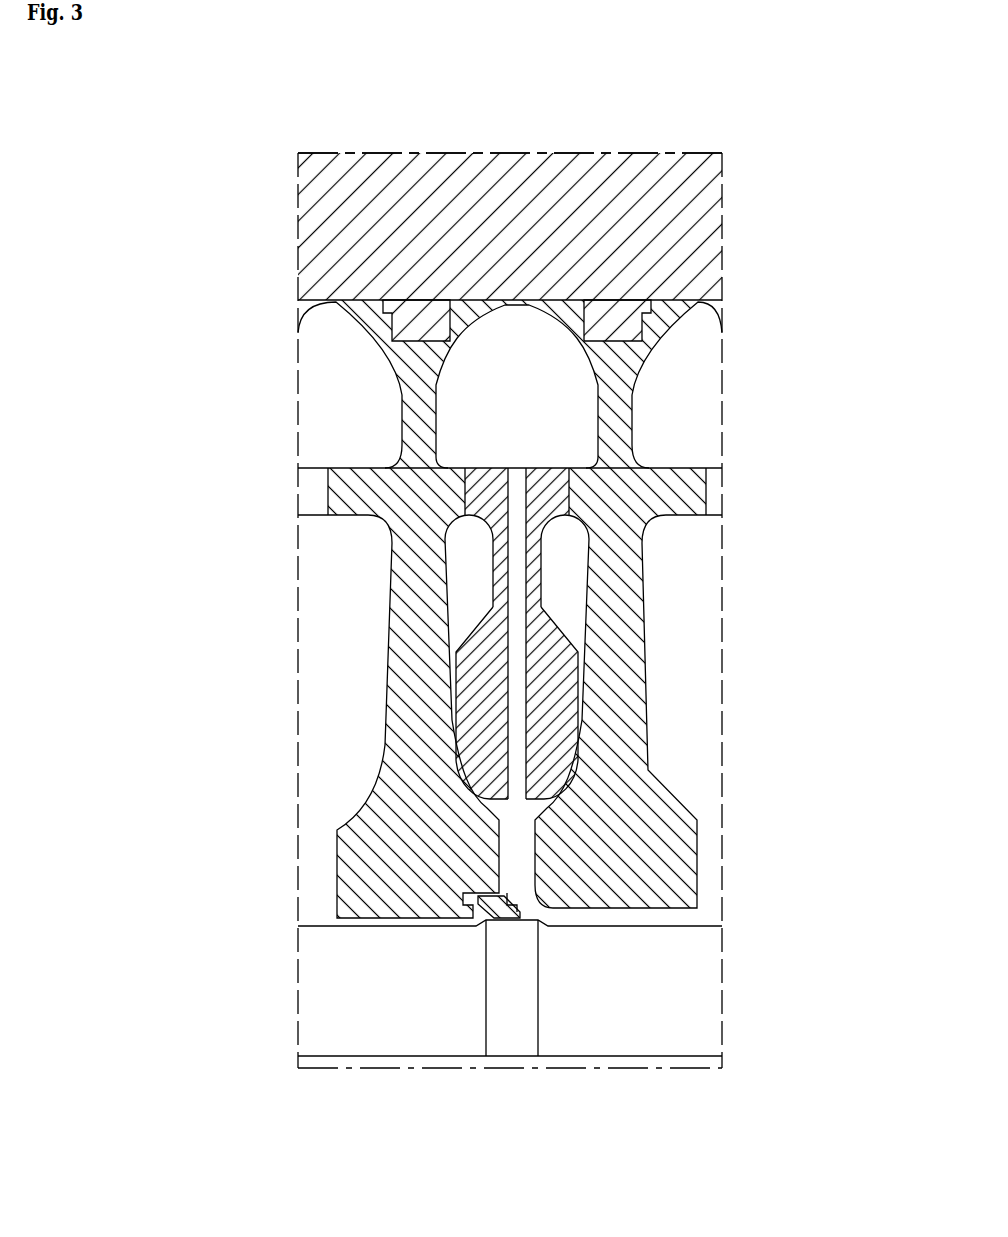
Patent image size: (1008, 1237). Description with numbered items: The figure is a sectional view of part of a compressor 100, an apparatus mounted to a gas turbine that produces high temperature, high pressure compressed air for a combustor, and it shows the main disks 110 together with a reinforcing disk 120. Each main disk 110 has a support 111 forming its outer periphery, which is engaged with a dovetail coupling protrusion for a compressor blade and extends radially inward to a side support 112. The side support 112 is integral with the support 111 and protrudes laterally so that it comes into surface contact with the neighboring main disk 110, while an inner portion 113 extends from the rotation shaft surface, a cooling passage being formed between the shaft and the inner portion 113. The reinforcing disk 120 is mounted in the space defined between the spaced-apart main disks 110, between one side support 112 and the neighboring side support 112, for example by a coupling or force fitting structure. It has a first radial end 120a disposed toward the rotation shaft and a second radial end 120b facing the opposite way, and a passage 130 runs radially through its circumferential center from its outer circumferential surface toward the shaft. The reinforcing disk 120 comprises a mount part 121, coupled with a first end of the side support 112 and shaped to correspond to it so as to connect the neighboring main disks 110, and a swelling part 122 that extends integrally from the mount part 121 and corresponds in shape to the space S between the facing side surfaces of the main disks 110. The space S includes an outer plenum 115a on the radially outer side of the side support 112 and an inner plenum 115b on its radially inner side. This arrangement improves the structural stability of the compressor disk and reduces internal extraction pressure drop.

The compressor 100 is at (536, 116).
The space S is at (198, 145).
The outer plenum 115a is at (545, 365).
The inner plenum 115b is at (588, 583).
The main disk 110 is at (200, 375).
The support 111 is at (385, 357).
The side support 112 is at (452, 462).
The inner portion 113 is at (392, 735).
The reinforcing disk 120 is at (827, 520).
The first radial end 120a is at (547, 783).
The second radial end 120b is at (560, 402).
The mount part 121 is at (557, 513).
The swelling part 122 is at (570, 670).
The passage 130 is at (517, 628).